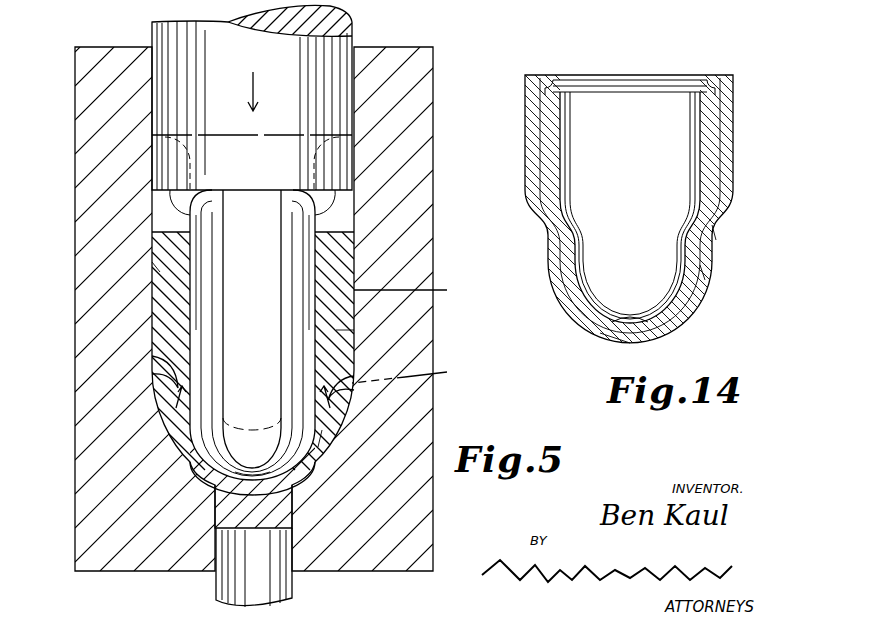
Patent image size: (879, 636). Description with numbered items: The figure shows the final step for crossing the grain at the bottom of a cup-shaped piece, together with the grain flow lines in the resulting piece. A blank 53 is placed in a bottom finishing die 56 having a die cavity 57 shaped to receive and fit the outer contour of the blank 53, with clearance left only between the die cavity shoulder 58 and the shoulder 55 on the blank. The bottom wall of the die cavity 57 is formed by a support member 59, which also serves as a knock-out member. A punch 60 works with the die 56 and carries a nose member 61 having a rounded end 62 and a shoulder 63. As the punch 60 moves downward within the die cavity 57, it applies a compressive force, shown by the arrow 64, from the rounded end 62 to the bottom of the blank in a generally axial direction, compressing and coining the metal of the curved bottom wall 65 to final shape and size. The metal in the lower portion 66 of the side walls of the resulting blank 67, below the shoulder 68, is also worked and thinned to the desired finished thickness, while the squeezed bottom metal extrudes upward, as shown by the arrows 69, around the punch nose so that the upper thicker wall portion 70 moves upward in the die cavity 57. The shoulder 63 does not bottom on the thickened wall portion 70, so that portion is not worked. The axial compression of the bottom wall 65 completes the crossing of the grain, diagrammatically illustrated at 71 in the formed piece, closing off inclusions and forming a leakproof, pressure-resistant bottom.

In FIG. 5, the blank 53 is at (160, 272).
In FIG. 5, the shoulder 55 is at (415, 370).
In FIG. 5, the bottom finishing die 56 is at (412, 250).
In FIG. 5, the die cavity 57 is at (416, 289).
In FIG. 5, the die cavity shoulder 58 is at (352, 412).
In FIG. 5, the support member 59 is at (280, 548).
In FIG. 5, the punch 60 is at (335, 45).
In FIG. 5, the nose member 61 is at (252, 329).
In FIG. 5, the rounded end 62 is at (222, 444).
In FIG. 5, the shoulder 63 is at (332, 203).
In FIG. 5, the arrow 64 is at (258, 73).
In FIG. 5, the curved bottom wall 65 is at (203, 467).
In FIG. 14, the curved bottom wall 65 is at (600, 333).
In FIG. 5, the lower portion of the side walls 66 is at (318, 447).
In FIG. 14, the lower portion of the side walls 66 is at (700, 264).
In FIG. 5, the resulting blank 67 is at (336, 330).
In FIG. 14, the resulting blank 67 is at (727, 160).
In FIG. 5, the shoulder 68 is at (155, 352).
In FIG. 14, the shoulder 68 is at (712, 228).
In FIG. 5, the arrows 69 is at (160, 405).
In FIG. 5, the upper thicker wall portion 70 is at (160, 302).
In FIG. 14, the upper thicker wall portion 70 is at (540, 128).
In FIG. 14, the crossed grain area 71 is at (675, 328).